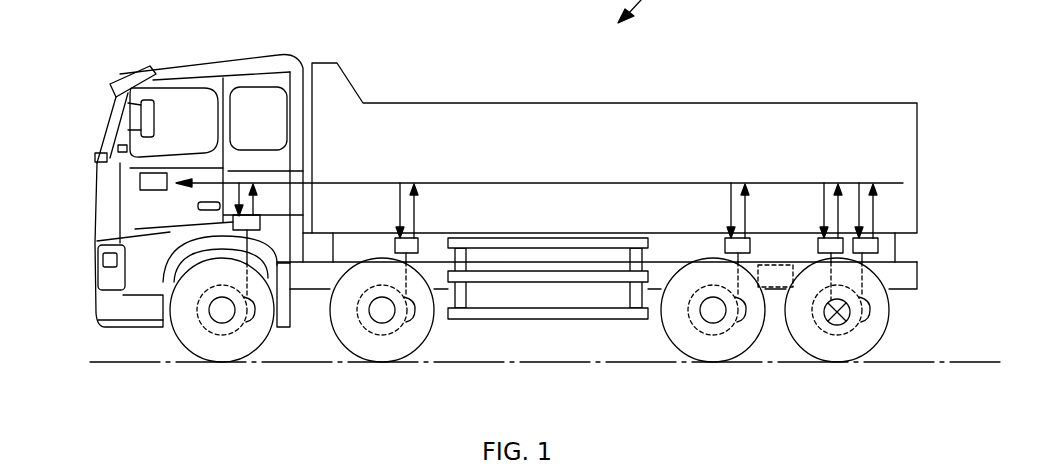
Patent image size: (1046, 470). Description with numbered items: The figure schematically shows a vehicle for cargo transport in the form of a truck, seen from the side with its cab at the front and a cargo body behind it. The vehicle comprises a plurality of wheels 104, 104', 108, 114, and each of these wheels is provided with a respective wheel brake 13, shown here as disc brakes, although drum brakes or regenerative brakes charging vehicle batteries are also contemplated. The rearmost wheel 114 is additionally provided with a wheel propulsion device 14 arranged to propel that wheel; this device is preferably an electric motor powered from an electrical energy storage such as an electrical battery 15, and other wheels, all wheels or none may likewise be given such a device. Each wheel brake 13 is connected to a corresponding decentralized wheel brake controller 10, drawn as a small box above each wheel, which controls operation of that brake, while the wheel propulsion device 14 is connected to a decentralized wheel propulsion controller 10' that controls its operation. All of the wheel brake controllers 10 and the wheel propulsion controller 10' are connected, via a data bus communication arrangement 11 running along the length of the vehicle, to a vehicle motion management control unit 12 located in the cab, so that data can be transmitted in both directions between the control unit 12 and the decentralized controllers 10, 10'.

The decentralized wheel brake controller 10 is at (500, 181).
The decentralized wheel propulsion controller 10' is at (802, 182).
The data bus communication arrangement 11 is at (612, 182).
The vehicle motion management control unit 12 is at (140, 183).
The wheel brake 13 is at (250, 320).
The wheel propulsion device 14 is at (852, 290).
The electrical battery 15 is at (775, 276).
The wheel 104 is at (222, 332).
The wheel 104' is at (382, 335).
The wheel 108 is at (705, 345).
The wheel 114 is at (827, 345).